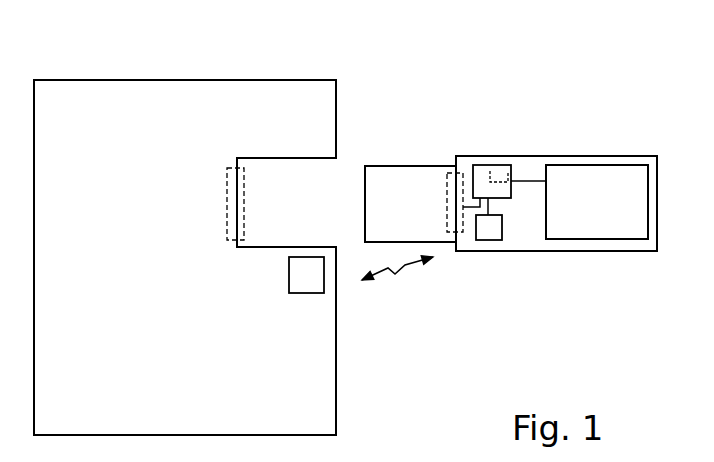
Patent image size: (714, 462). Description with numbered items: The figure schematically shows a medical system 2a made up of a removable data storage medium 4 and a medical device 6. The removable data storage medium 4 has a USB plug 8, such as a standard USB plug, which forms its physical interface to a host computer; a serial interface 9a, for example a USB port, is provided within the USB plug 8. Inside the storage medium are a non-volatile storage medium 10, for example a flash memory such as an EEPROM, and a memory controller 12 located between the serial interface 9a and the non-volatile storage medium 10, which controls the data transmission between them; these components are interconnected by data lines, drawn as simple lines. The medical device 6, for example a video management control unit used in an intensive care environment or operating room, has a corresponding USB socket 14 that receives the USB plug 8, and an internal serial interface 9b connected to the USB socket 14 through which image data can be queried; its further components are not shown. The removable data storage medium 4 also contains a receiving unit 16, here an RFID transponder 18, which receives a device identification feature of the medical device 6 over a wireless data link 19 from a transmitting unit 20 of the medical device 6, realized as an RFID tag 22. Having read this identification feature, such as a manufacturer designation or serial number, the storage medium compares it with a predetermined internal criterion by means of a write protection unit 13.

The medical system 2a is at (578, 106).
The removable data storage medium 4 is at (620, 138).
The medical device 6 is at (265, 79).
The USB plug 8 is at (411, 165).
The serial interface 9a is at (447, 178).
The internal serial interface 9b is at (244, 225).
The non-volatile storage medium 10 is at (605, 239).
The memory controller 12 is at (514, 177).
The write protection unit 13 is at (492, 182).
The USB socket 14 is at (297, 177).
The receiving unit 16 is at (506, 263).
The RFID transponder 18 is at (490, 240).
The wireless data link 19 is at (410, 268).
The transmitting unit 20 is at (292, 315).
The RFID tag 22 is at (307, 294).